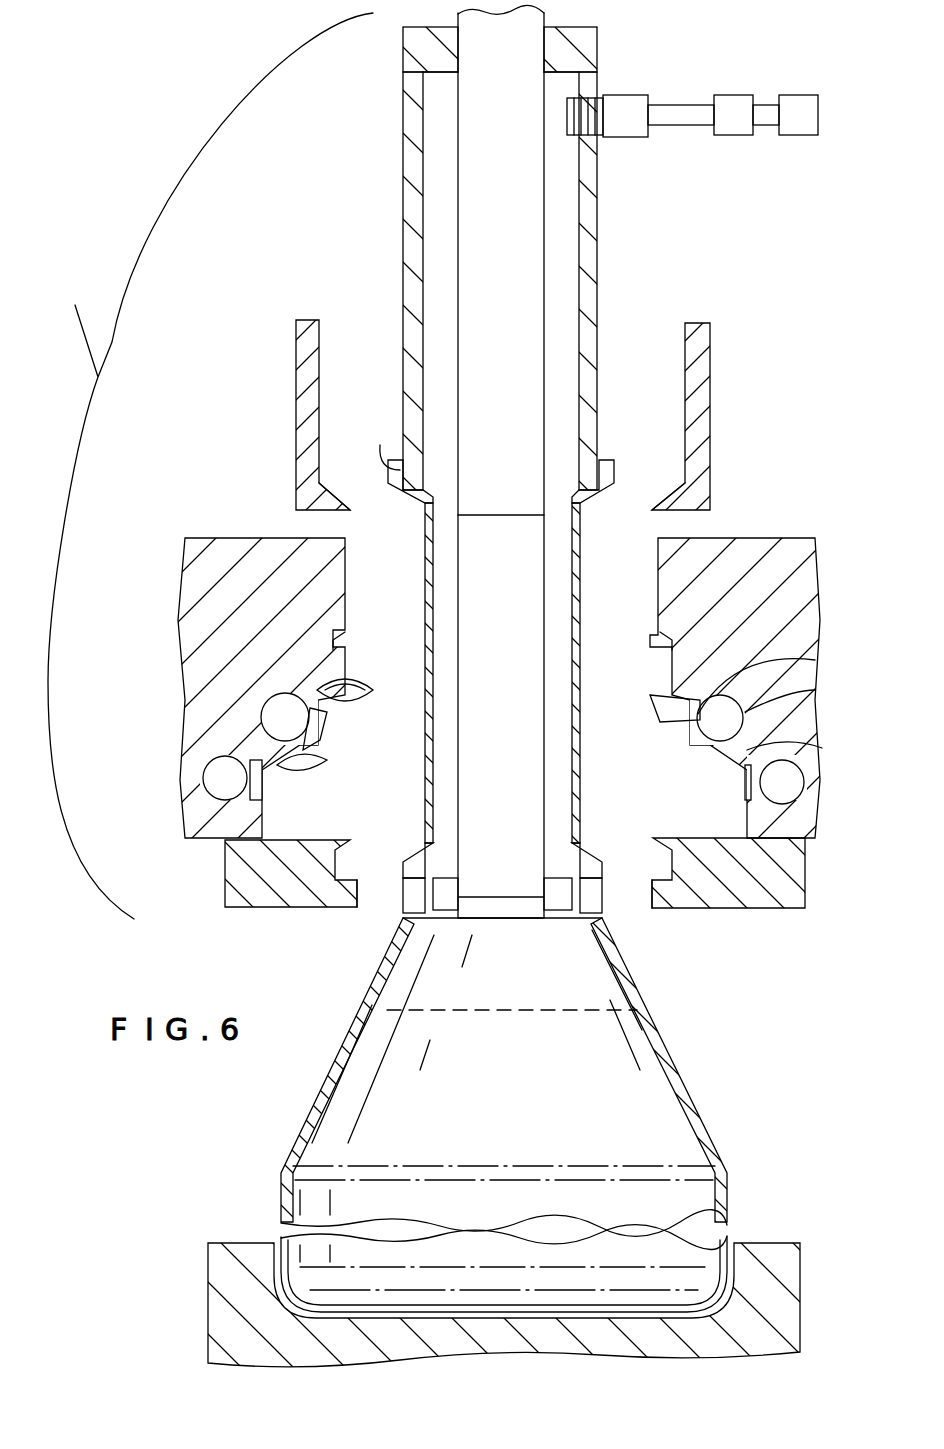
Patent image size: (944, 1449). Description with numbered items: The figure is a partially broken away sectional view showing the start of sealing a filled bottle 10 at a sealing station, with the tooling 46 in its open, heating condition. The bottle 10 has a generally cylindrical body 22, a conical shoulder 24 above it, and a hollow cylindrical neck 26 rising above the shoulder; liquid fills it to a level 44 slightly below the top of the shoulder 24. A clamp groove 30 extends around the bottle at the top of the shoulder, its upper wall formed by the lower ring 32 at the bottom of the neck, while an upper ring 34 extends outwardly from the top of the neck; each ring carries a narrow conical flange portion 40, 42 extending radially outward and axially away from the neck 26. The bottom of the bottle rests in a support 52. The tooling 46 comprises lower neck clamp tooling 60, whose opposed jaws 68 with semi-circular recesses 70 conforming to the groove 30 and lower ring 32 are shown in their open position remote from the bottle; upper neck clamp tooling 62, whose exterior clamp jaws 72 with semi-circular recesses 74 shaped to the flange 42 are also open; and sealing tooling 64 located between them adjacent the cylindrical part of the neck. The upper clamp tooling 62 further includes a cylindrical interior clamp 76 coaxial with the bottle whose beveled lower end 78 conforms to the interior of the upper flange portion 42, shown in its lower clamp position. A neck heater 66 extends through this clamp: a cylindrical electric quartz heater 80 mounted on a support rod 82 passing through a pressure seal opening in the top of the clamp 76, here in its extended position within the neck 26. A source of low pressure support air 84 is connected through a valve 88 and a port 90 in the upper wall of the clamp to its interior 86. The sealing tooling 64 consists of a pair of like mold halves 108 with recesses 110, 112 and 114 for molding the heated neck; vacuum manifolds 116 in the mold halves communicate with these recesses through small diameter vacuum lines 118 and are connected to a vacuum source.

The bottle 10 is at (300, 1095).
The body 22 is at (735, 1197).
The shoulder 24 is at (660, 1032).
The neck 26 is at (582, 637).
The clamp groove 30 is at (405, 905).
The lower ring 32 is at (598, 870).
The upper ring 34 is at (385, 445).
The conical flange portion 40 is at (418, 840).
The conical flange portion 42 is at (598, 505).
The fill level 44 is at (515, 1012).
The tooling 46 is at (210, 466).
The support 52 is at (770, 1262).
The lower neck clamp tooling 60 is at (218, 865).
The upper neck clamp tooling 62 is at (268, 437).
The sealing tooling 64 is at (168, 612).
The neck heater 66 is at (458, 86).
The jaws 68 is at (260, 895).
The semi-circular recess 70 is at (365, 885).
The exterior clamp jaws 72 is at (295, 332).
The semi-circular recesses 74 is at (327, 492).
The interior clamp 76 is at (597, 220).
The beveled lower end 78 is at (402, 505).
The quartz heater 80 is at (519, 749).
The support rod 82 is at (522, 236).
The source of low pressure support air 84 is at (808, 97).
The interior 86 is at (435, 181).
The valve 88 is at (736, 100).
The port 90 is at (623, 104).
The mold halves 108 is at (200, 575).
The recess 110 is at (262, 812).
The recess 112 is at (320, 730).
The recess 114 is at (345, 657).
The vacuum manifolds 116 is at (262, 717).
The vacuum lines 118 is at (345, 705).